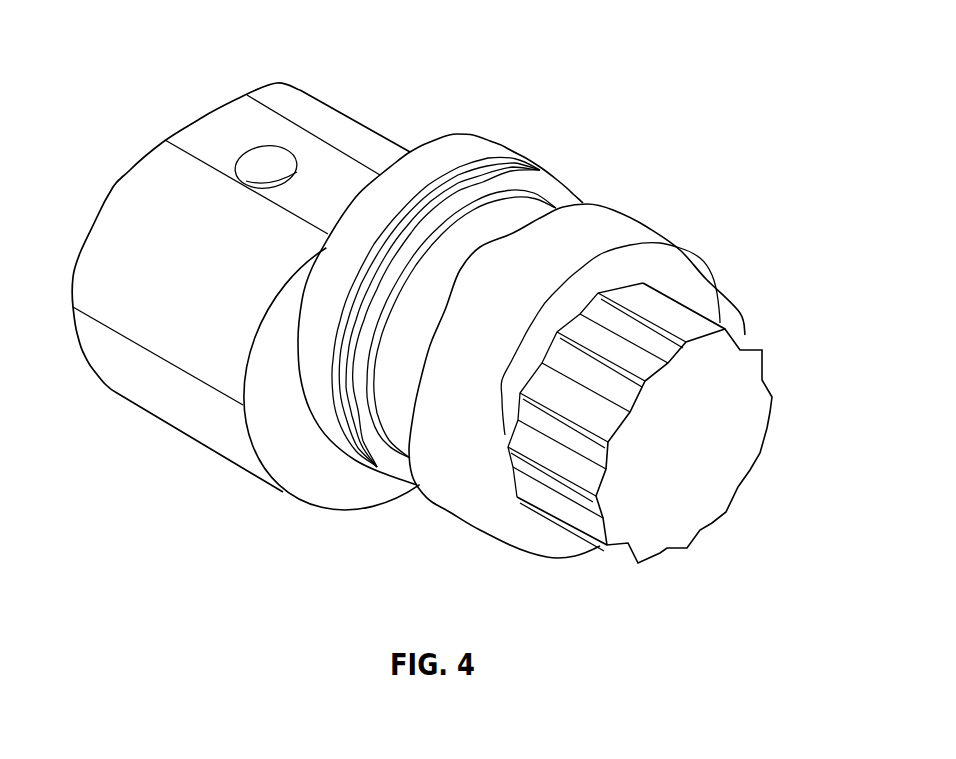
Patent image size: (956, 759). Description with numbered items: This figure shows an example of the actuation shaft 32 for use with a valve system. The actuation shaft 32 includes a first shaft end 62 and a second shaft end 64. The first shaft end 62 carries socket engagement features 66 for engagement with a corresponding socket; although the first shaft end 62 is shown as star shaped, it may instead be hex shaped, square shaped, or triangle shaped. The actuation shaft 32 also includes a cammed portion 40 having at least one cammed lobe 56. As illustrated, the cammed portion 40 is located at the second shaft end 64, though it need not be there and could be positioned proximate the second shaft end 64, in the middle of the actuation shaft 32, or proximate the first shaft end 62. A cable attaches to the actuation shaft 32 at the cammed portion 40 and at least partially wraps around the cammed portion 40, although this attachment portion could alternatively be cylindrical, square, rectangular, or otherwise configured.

The actuation shaft 32 is at (727, 122).
The cammed portion 40 is at (103, 217).
The cammed lobe 56 is at (323, 492).
The first shaft end 62 is at (737, 319).
The second shaft end 64 is at (312, 88).
The socket engagement features 66 is at (712, 472).